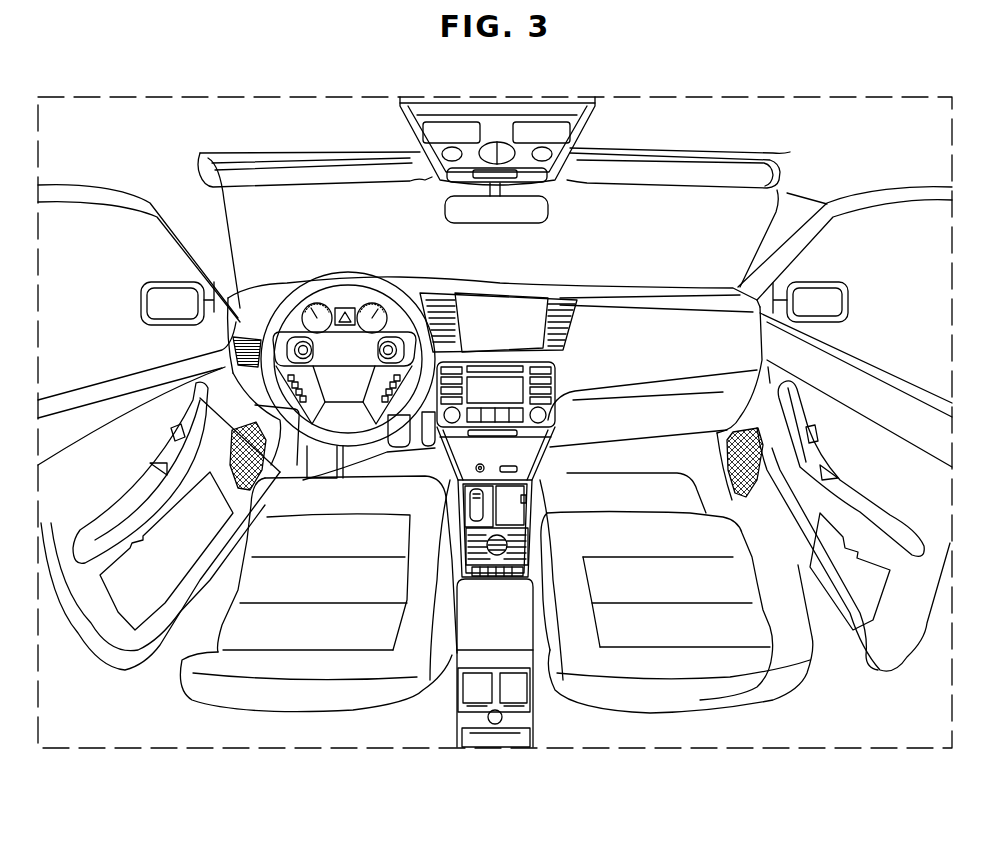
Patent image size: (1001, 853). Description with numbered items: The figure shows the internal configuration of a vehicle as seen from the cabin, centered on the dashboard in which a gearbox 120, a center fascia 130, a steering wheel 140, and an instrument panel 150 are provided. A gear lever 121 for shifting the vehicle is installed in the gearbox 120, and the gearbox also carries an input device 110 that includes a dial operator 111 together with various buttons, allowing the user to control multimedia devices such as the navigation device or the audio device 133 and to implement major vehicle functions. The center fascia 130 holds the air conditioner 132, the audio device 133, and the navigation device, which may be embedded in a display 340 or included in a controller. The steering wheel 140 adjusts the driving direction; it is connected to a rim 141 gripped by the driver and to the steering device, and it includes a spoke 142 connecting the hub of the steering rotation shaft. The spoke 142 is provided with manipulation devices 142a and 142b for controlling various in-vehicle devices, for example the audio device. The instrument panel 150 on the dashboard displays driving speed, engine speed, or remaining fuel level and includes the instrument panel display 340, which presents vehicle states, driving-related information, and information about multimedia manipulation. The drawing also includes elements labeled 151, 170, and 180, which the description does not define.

The input device 110 is at (485, 552).
The dial operator 111 is at (463, 535).
The gearbox 120 is at (495, 528).
The gear lever 121 is at (466, 492).
The center fascia 130 is at (591, 279).
The air conditioner 132 is at (529, 296).
The audio device 133 is at (562, 373).
The steering wheel 140 is at (273, 338).
The rim 141 is at (313, 282).
The spoke 142 is at (273, 330).
The manipulation device 142a is at (300, 338).
The manipulation device 142b is at (418, 320).
The instrument panel 150 is at (357, 280).
The warning indicator 151 is at (354, 306).
The seat 170 is at (318, 693).
The start button 180 is at (400, 445).
The display 340 is at (507, 306).